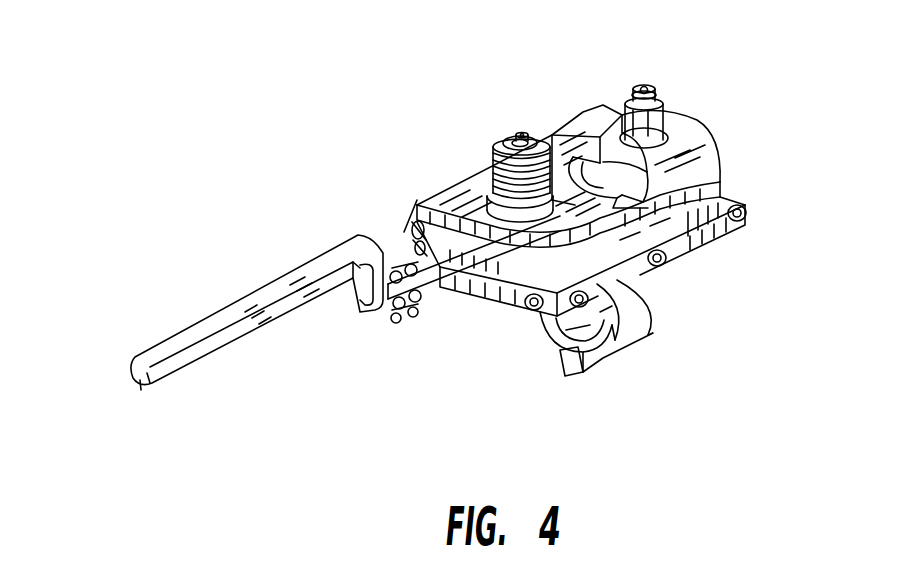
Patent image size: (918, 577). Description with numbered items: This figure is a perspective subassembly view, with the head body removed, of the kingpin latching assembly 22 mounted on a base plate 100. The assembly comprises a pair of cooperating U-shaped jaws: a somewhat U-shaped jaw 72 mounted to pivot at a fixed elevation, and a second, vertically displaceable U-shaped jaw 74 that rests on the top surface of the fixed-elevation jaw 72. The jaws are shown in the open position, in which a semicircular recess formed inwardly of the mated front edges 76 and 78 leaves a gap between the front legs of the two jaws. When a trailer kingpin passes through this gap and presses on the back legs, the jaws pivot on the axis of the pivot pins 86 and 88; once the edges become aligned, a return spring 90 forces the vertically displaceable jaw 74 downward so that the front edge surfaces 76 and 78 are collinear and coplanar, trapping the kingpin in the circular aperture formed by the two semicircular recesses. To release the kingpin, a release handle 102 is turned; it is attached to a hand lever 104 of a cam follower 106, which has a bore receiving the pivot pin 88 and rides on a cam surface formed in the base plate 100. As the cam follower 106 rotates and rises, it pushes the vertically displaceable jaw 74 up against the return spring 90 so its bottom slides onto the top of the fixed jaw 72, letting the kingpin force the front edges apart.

The kingpin latching assembly 22 is at (338, 84).
The fixed-elevation U-shaped jaw 72 is at (682, 143).
The vertically displaceable U-shaped jaw 74 is at (575, 150).
The front edge of fixed jaw 76 is at (673, 266).
The front edge of vertically displaceable jaw 78 is at (633, 172).
The pivot pin 86 is at (663, 96).
The pivot pin 88 is at (512, 140).
The return spring 90 is at (493, 160).
The base plate 100 is at (537, 293).
The release handle 102 is at (203, 320).
The hand lever 104 is at (416, 222).
The cam follower 106 is at (497, 268).